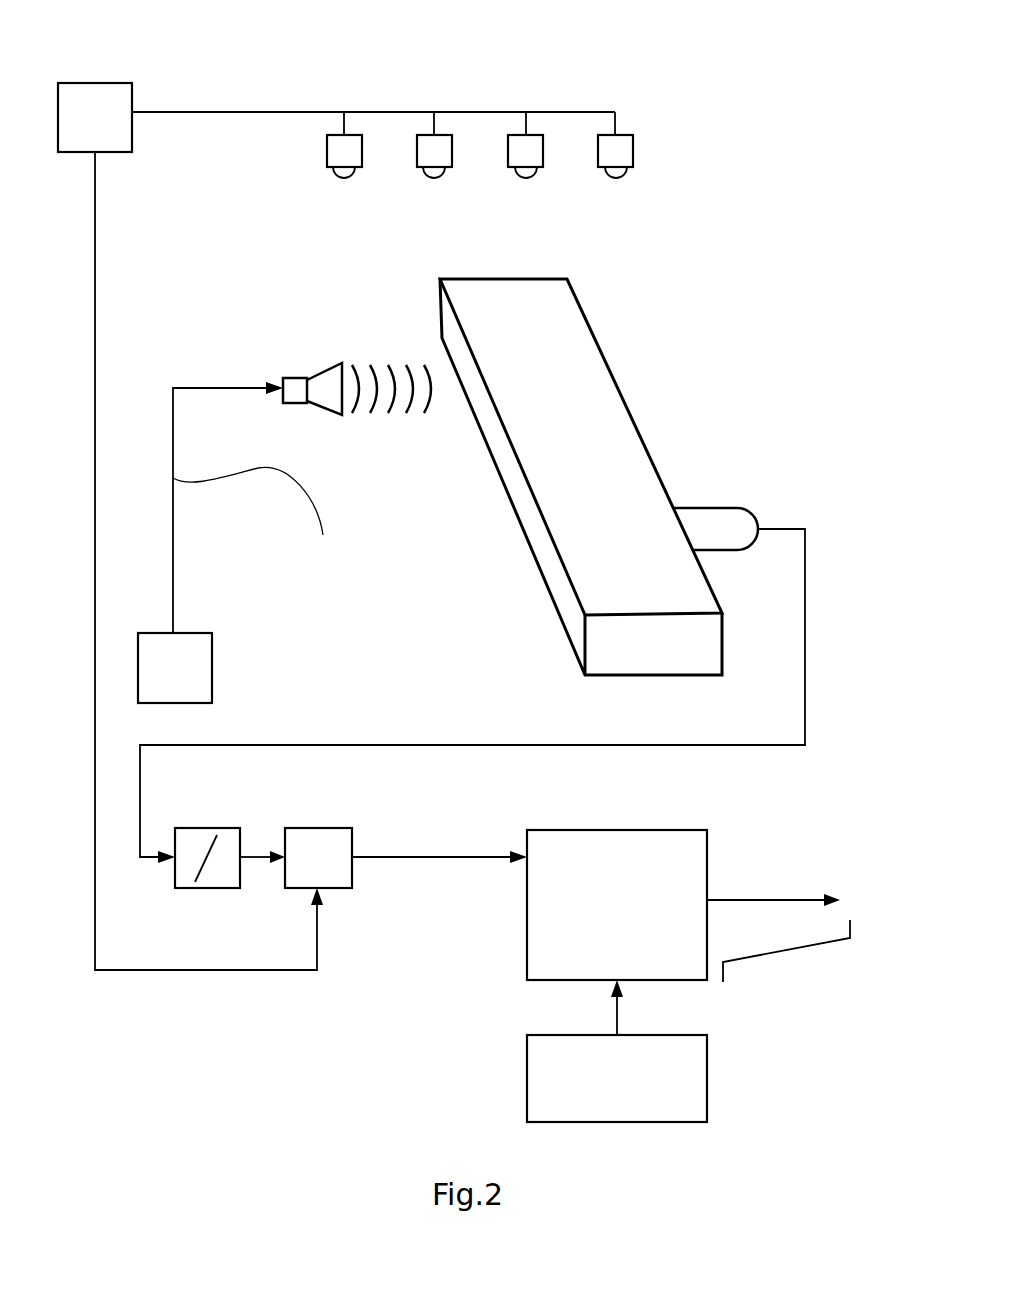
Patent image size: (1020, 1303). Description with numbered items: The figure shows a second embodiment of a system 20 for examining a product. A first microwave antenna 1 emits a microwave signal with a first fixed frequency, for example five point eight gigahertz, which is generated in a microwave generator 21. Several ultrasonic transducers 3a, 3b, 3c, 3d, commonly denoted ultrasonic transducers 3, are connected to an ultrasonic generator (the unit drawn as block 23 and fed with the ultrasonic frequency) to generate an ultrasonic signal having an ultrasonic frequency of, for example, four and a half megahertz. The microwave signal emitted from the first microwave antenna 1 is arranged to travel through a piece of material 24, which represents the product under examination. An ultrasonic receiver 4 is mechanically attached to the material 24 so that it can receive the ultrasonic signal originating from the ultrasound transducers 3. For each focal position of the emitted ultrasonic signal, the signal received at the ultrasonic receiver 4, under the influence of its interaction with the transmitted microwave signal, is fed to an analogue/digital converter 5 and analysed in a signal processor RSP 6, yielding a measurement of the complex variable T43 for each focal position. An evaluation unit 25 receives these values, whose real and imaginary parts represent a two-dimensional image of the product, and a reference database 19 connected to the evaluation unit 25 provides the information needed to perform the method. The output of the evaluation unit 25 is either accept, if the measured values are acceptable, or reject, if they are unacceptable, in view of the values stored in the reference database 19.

The first microwave antenna 1 is at (357, 374).
The ultrasonic transducers 3 is at (480, 99).
The ultrasonic transducer 3a is at (337, 152).
The ultrasonic transducer 3b is at (425, 145).
The ultrasonic transducer 3c is at (515, 145).
The ultrasonic transducer 3d is at (625, 140).
The ultrasonic receiver 4 is at (472, 666).
The analogue/digital converter 5 is at (187, 880).
The signal processor RSP 6 is at (297, 880).
The reference database 19 is at (697, 1062).
The system 20 is at (772, 243).
The microwave generator 21 is at (286, 542).
The ultrasonic signal generator 23 is at (201, 541).
The piece of material 24 is at (580, 392).
The evaluation unit 25 is at (668, 853).